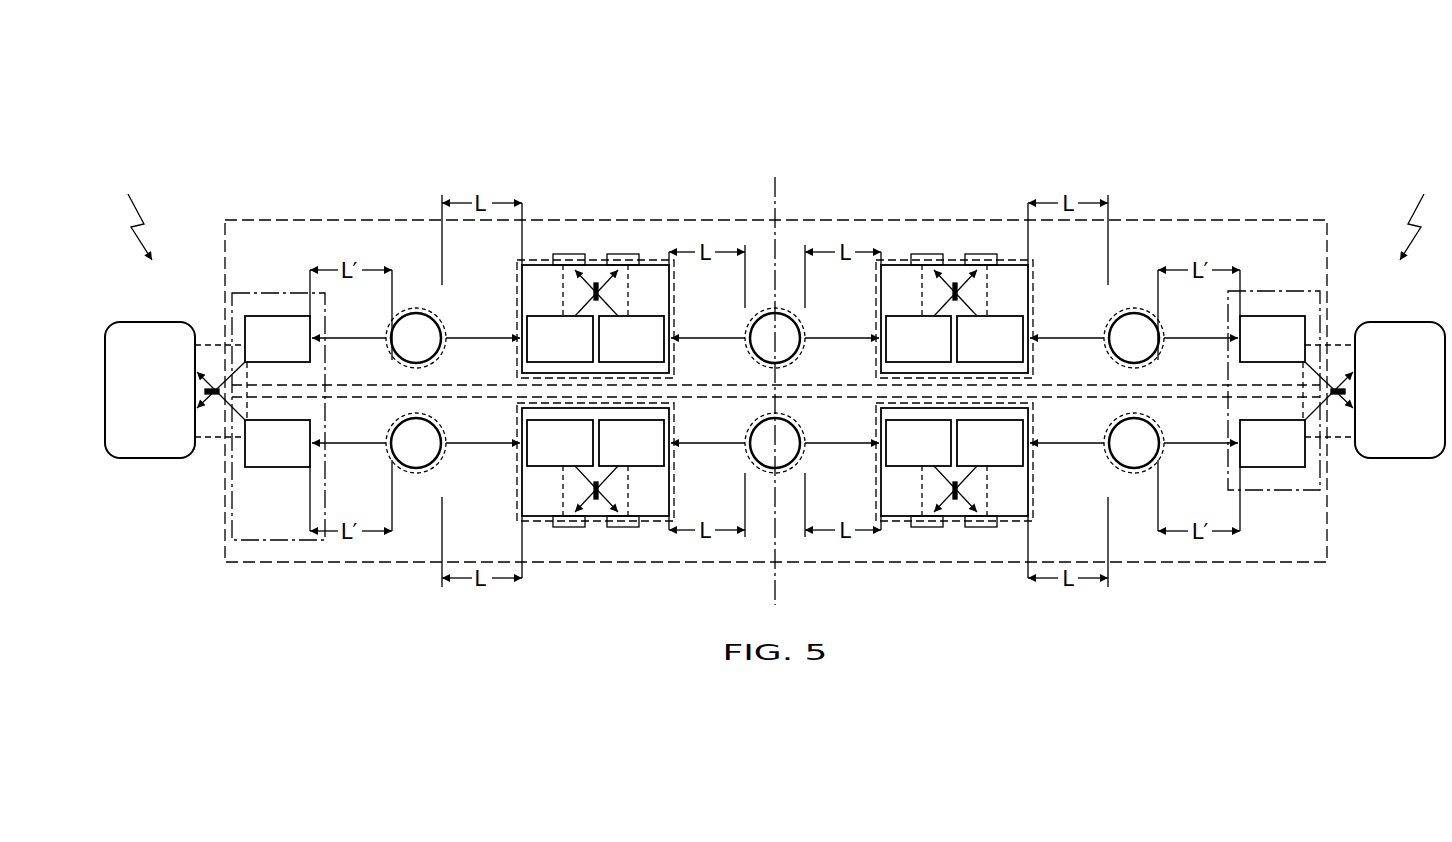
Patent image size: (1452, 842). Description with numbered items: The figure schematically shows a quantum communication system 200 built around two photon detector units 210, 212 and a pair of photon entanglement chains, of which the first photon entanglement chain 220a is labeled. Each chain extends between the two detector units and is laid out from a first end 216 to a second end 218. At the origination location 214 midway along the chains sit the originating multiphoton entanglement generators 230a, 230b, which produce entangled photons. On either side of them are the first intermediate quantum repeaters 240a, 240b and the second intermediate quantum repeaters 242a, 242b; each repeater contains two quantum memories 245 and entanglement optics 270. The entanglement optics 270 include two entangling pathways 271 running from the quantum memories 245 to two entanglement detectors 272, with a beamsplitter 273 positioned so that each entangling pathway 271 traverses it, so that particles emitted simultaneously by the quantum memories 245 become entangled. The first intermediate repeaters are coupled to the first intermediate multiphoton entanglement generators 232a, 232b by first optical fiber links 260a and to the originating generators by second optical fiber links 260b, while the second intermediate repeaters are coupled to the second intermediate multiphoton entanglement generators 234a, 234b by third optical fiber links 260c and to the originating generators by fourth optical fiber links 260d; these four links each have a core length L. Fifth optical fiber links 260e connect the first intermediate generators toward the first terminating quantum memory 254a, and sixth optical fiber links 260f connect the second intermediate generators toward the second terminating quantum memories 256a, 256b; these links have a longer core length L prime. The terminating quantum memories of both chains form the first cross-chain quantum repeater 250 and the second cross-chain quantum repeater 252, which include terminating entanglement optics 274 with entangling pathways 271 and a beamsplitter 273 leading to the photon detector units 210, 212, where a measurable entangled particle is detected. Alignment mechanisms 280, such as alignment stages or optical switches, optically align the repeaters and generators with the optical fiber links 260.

The quantum communication system 200 is at (1206, 120).
The photon detector unit 210 is at (118, 322).
The photon detector unit 212 is at (1432, 322).
The origination location 214 is at (775, 182).
The first end 216 is at (126, 214).
The second end 218 is at (1426, 214).
The first photon entanglement chain 220a is at (257, 220).
The originating multiphoton entanglement generator 230a is at (752, 362).
The originating multiphoton entanglement generator 230b is at (755, 420).
The first intermediate multiphoton entanglement generator 232a is at (420, 310).
The first intermediate multiphoton entanglement generator 232b is at (420, 473).
The second intermediate multiphoton entanglement generator 234a is at (1134, 310).
The second intermediate multiphoton entanglement generator 234b is at (1134, 473).
The first intermediate quantum repeater 240a is at (672, 262).
The first intermediate quantum repeater 240b is at (672, 521).
The second intermediate quantum repeater 242a is at (880, 262).
The second intermediate quantum repeater 242b is at (880, 521).
The quantum memory 245 is at (775, 391).
The first cross-chain quantum repeater 250 is at (232, 300).
The second cross-chain quantum repeater 252 is at (1320, 300).
The first terminating quantum memory 254a is at (283, 316).
The second terminating quantum memory 256a is at (1278, 316).
The second terminating quantum memory 256b is at (1278, 467).
The optical fiber links 260 is at (457, 325).
The first optical fiber link 260a is at (480, 338).
The second optical fiber link 260b is at (705, 338).
The third optical fiber link 260c is at (1068, 338).
The fourth optical fiber link 260d is at (840, 338).
The fifth optical fiber link 260e is at (352, 338).
The sixth optical fiber link 260f is at (1195, 338).
The entanglement optics 270 is at (563, 283).
The entangling pathway 271 is at (563, 292).
The entanglement detector 272 is at (560, 254).
The beamsplitter 273 is at (596, 283).
The terminating entanglement optics 274 is at (200, 438).
The alignment mechanism 280 is at (415, 368).